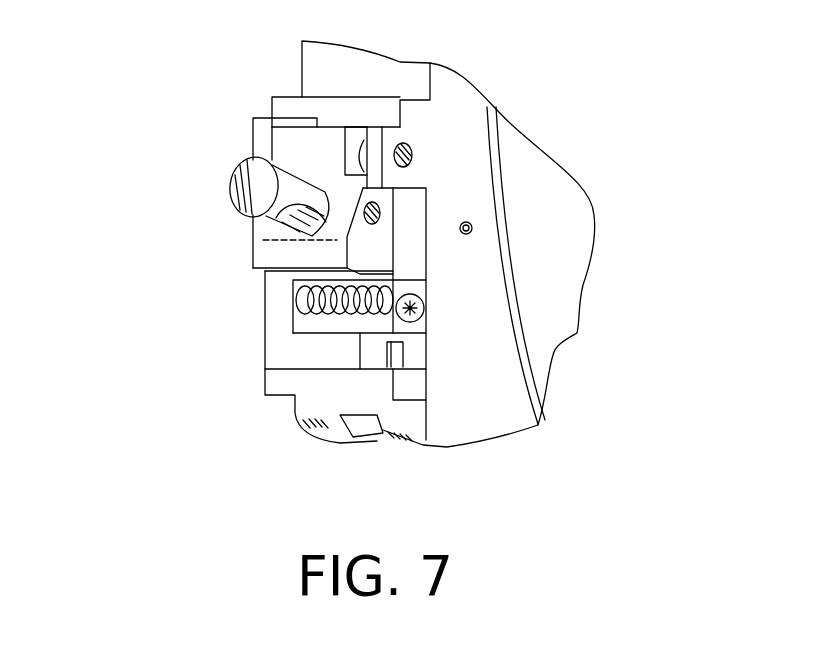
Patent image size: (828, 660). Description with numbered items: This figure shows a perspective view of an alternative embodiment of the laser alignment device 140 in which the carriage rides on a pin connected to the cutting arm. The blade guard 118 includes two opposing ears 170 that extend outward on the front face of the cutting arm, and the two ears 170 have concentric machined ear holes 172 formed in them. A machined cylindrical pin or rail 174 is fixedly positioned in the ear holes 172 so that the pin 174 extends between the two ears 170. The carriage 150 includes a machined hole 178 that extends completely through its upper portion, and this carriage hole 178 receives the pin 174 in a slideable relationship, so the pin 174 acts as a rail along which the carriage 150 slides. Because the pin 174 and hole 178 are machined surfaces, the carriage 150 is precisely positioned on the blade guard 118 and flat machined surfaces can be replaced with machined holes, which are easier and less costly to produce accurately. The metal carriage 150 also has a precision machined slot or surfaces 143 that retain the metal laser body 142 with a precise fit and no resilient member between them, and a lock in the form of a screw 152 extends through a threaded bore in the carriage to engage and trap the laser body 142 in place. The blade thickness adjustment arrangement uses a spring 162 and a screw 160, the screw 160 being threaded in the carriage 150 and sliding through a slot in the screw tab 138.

The blade guard 118 is at (545, 323).
The screw tab 138 is at (400, 328).
The latch assembly 140 is at (183, 358).
The laser body 142 is at (231, 180).
The machined slot or surfaces 143 is at (252, 218).
The carriage 150 is at (272, 302).
The screw 152 is at (387, 230).
The screw 160 is at (428, 315).
The spring 162 is at (313, 318).
The ears 170 is at (252, 130).
The ear holes 172 is at (413, 137).
The pin 174 is at (412, 150).
The carriage hole 178 is at (357, 143).